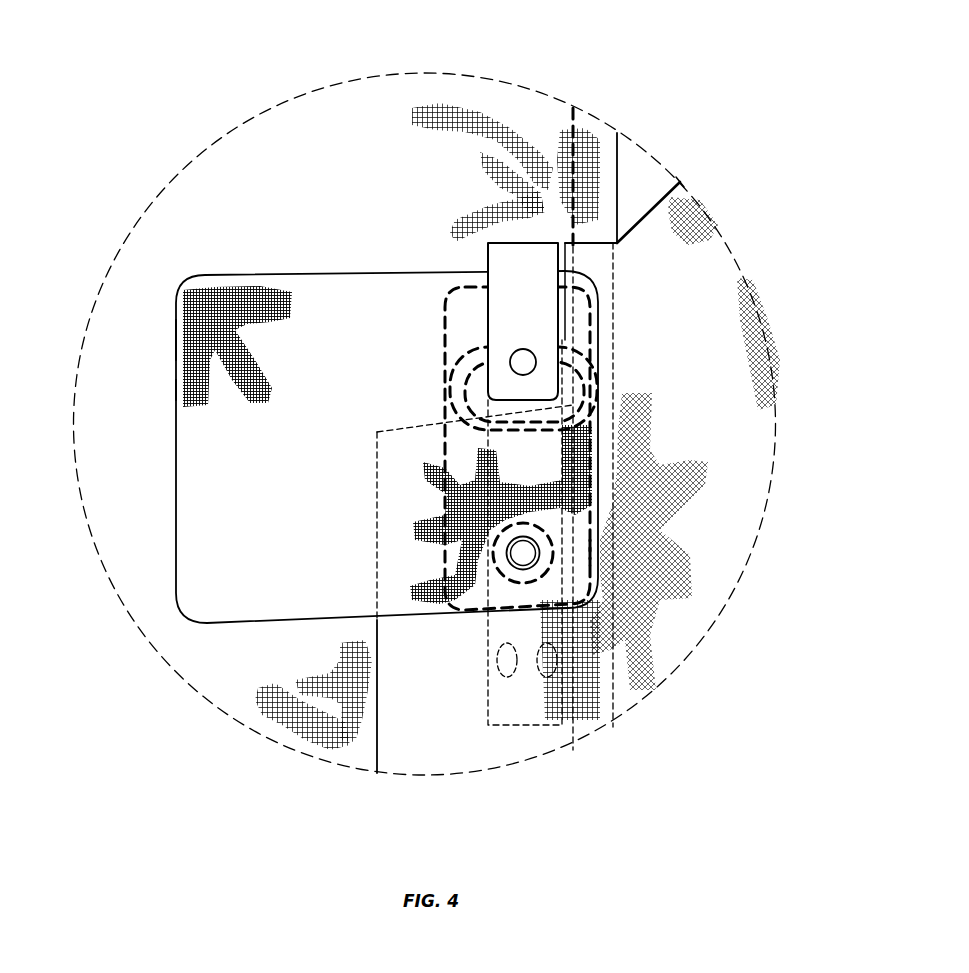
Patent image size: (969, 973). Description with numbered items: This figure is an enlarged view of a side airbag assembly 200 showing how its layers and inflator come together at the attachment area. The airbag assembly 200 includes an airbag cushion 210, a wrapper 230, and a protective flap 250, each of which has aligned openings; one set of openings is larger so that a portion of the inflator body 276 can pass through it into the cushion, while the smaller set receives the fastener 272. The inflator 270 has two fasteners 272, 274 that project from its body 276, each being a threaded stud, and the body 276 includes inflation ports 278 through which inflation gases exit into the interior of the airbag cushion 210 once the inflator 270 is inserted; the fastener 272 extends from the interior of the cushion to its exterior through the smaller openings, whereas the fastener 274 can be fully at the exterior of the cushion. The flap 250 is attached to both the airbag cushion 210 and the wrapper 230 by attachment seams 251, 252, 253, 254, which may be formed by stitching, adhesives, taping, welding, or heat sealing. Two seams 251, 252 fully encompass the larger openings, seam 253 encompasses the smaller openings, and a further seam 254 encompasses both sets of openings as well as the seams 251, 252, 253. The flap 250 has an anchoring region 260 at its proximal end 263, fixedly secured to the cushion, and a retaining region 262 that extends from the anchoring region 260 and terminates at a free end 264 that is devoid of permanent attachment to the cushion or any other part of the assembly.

The airbag assembly 200 is at (182, 86).
The airbag cushion 210 is at (273, 717).
The wrapper 230 is at (690, 630).
The protective flap 250 is at (217, 595).
The attachment seam 251 is at (590, 398).
The attachment seam 252 is at (590, 428).
The attachment seam 253 is at (553, 540).
The attachment seam 254 is at (590, 555).
The anchoring region 260 is at (438, 553).
The retaining region 262 is at (210, 384).
The proximal end 263 is at (603, 363).
The free end 264 is at (172, 338).
The inflator 270 is at (522, 257).
The fastener 272 is at (521, 570).
The fastener 274 is at (533, 350).
The body 276 is at (503, 310).
The inflation ports 278 is at (488, 666).